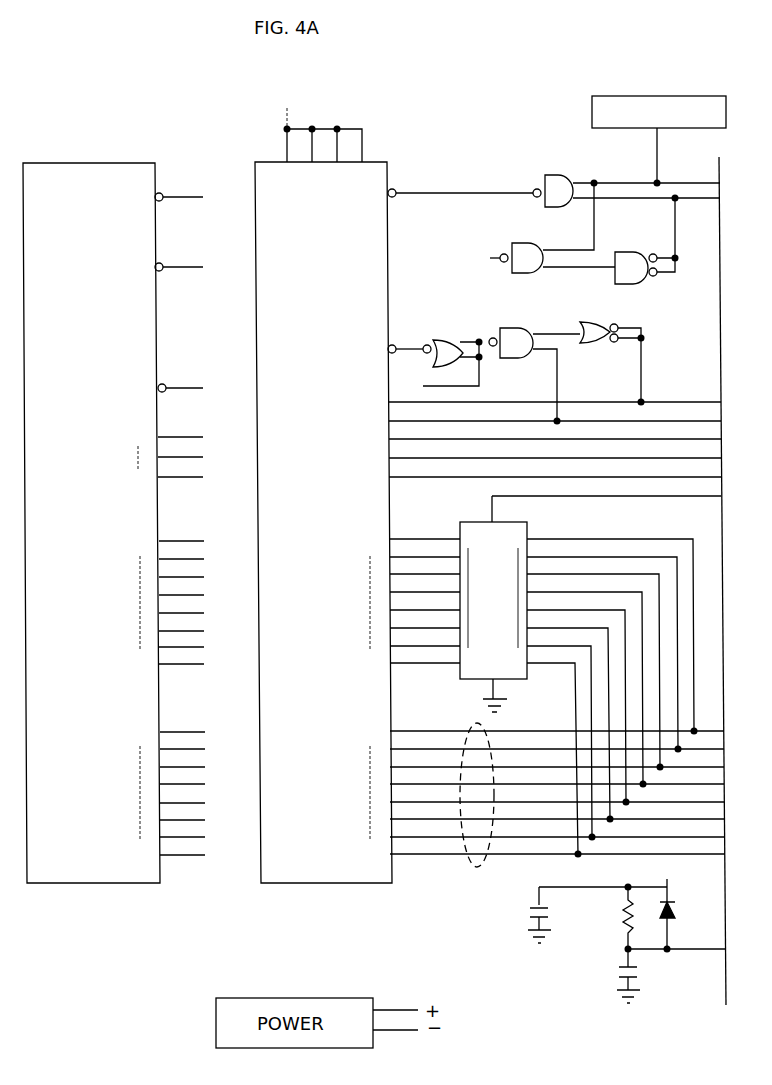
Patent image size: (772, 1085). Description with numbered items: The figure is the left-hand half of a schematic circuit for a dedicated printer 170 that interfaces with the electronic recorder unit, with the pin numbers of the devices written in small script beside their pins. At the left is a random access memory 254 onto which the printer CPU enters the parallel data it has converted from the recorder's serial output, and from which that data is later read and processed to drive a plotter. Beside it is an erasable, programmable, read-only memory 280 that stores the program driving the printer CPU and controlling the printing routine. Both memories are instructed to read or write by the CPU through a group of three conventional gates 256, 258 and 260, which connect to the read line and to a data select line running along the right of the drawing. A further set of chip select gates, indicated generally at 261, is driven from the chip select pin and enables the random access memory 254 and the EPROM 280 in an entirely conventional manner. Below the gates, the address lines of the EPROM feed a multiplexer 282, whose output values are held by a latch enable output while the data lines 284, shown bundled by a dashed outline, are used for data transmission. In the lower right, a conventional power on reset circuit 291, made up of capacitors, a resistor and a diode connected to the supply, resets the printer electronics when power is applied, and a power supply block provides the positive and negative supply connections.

The random access memory 254 is at (136, 162).
The erasable, programmable, read-only memory 280 is at (379, 162).
The dedicated printer 170 is at (527, 124).
The gate 256 is at (561, 175).
The gate 258 is at (518, 243).
The gate 260 is at (630, 252).
The chip select gates 261 is at (481, 302).
The multiplexer 282 is at (530, 514).
The data lines 284 is at (468, 872).
The power on reset circuit 291 is at (592, 952).